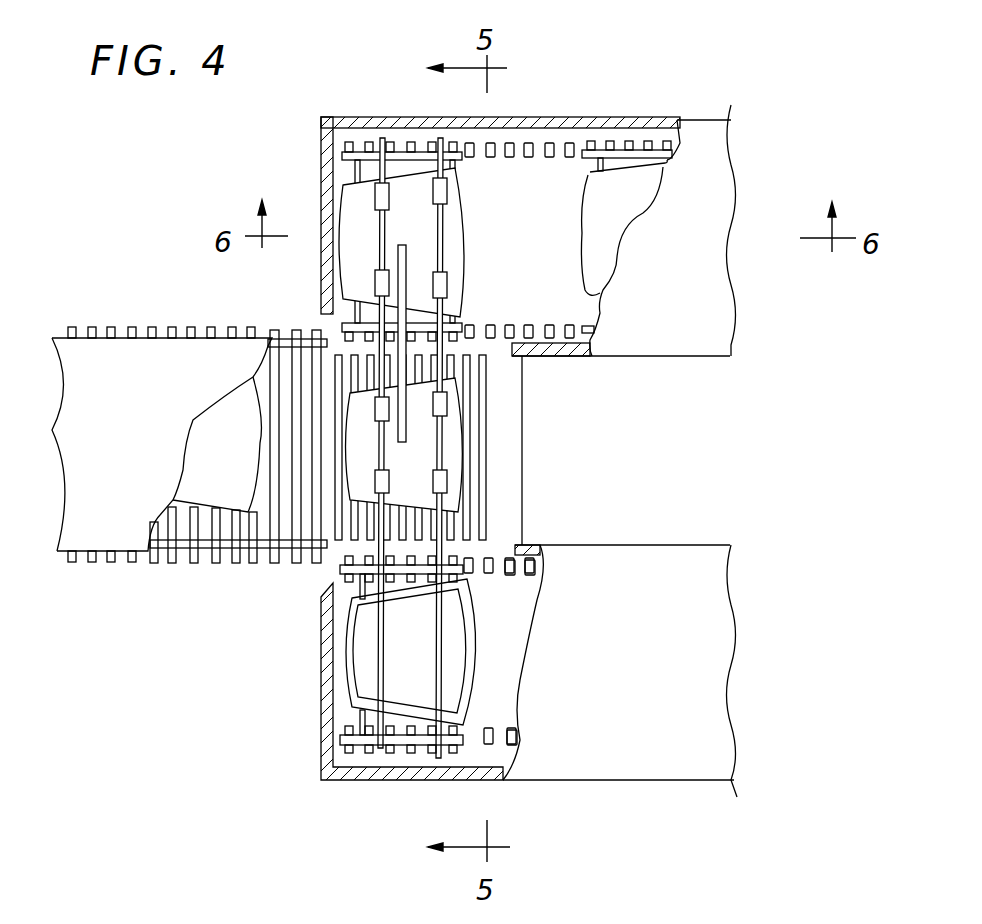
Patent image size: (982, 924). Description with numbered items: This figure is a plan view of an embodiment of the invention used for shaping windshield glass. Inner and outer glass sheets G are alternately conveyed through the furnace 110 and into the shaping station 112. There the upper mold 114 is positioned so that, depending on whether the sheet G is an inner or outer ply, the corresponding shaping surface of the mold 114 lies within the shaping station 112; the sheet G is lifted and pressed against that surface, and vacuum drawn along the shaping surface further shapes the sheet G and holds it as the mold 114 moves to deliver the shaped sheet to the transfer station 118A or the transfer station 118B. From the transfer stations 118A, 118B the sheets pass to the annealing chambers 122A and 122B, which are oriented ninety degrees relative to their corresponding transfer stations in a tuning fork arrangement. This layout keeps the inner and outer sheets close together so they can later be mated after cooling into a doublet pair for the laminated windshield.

The furnace 110 is at (150, 402).
The shaping station 112 is at (530, 427).
The upper mold 114 is at (453, 392).
The transfer station 118A is at (320, 284).
The transfer station 118B is at (320, 641).
The annealing chamber 122A is at (710, 308).
The annealing chamber 122B is at (648, 702).
The glass sheet G is at (224, 461).